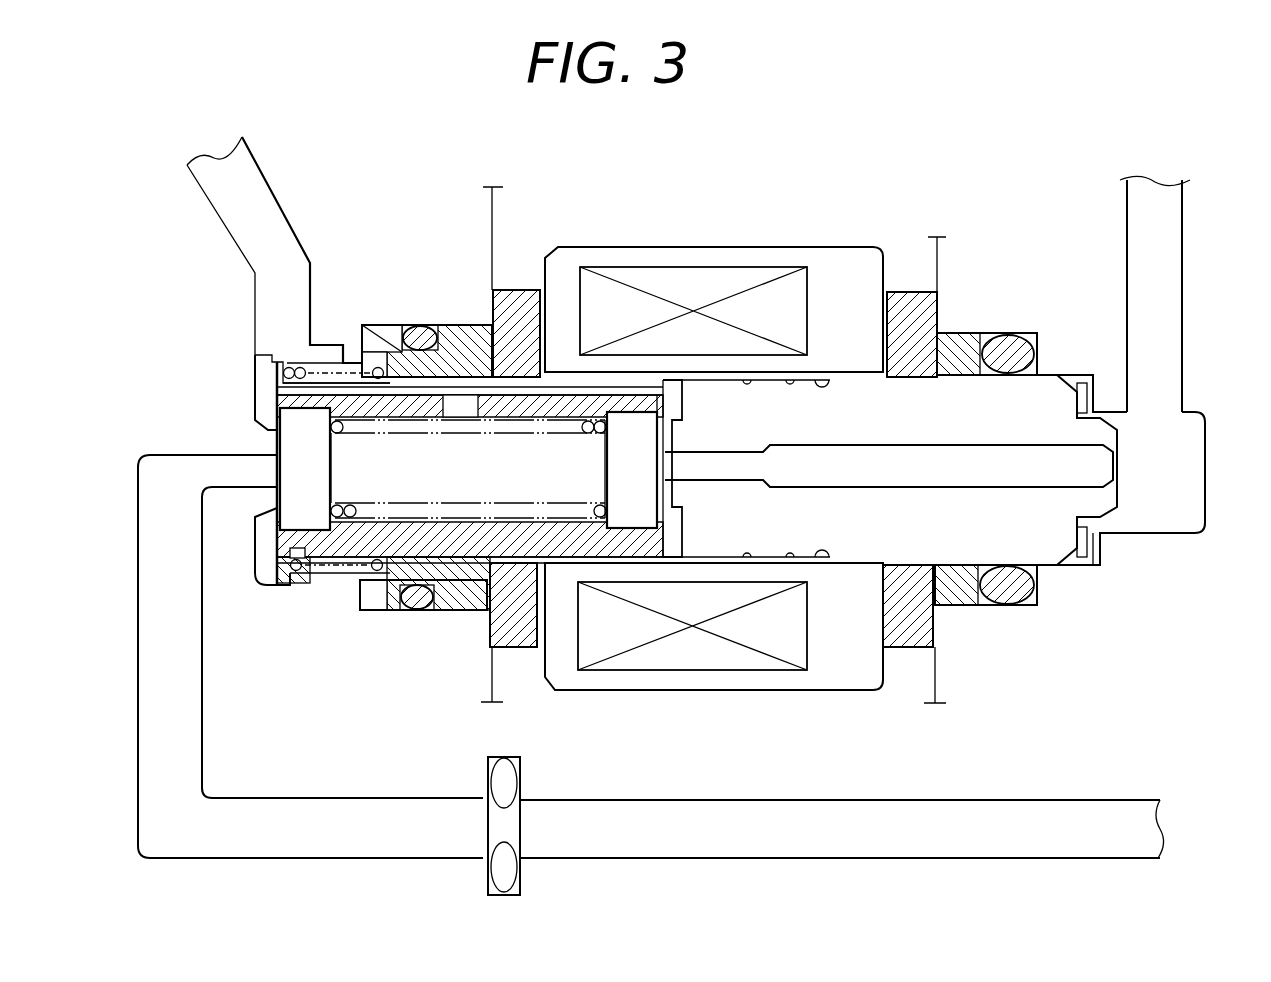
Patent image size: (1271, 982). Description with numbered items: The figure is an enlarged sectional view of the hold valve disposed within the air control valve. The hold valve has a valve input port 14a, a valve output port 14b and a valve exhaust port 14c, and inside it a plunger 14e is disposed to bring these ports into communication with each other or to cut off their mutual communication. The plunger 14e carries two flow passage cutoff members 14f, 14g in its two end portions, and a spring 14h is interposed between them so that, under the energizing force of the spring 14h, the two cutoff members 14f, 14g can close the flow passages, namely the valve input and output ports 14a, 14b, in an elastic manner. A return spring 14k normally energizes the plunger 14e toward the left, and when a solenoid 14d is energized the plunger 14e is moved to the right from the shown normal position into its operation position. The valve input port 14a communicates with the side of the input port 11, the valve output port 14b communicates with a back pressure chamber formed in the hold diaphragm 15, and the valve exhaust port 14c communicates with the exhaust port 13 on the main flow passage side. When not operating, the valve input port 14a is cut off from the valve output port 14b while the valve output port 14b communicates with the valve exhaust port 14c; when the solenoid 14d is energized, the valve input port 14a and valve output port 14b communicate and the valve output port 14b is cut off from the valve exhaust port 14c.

The input port 11 is at (1123, 831).
The exhaust port 13 is at (1157, 208).
The hold diaphragm 15 is at (233, 187).
The valve input port 14a is at (183, 462).
The valve output port 14b is at (287, 230).
The valve exhaust port 14c is at (1025, 482).
The solenoid 14d is at (700, 268).
The plunger 14e is at (388, 565).
The flow passage cutoff member 14f is at (312, 513).
The flow passage cutoff member 14g is at (628, 515).
The spring 14h is at (465, 520).
The return spring 14k is at (337, 372).